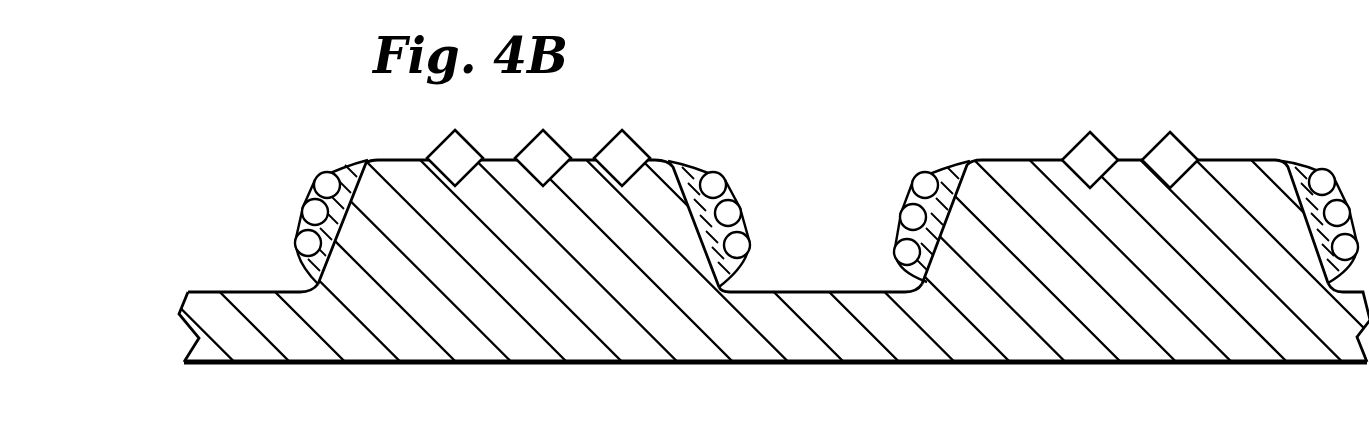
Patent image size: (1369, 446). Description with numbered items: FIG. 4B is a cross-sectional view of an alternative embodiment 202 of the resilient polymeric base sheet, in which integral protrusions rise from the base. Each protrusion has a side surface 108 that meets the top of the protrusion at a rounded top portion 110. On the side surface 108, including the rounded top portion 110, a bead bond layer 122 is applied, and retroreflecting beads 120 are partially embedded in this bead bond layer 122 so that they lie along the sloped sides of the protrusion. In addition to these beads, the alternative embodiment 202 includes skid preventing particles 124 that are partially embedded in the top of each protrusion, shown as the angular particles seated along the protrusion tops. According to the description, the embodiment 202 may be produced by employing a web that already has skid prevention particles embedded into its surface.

The side surface 108 is at (727, 288).
The rounded top portion 110 is at (363, 162).
The retroreflecting beads 120 is at (728, 181).
The bead bond layer 122 is at (690, 167).
The skid preventing particles 124 is at (632, 132).
The alternative embodiment 202 is at (1018, 128).